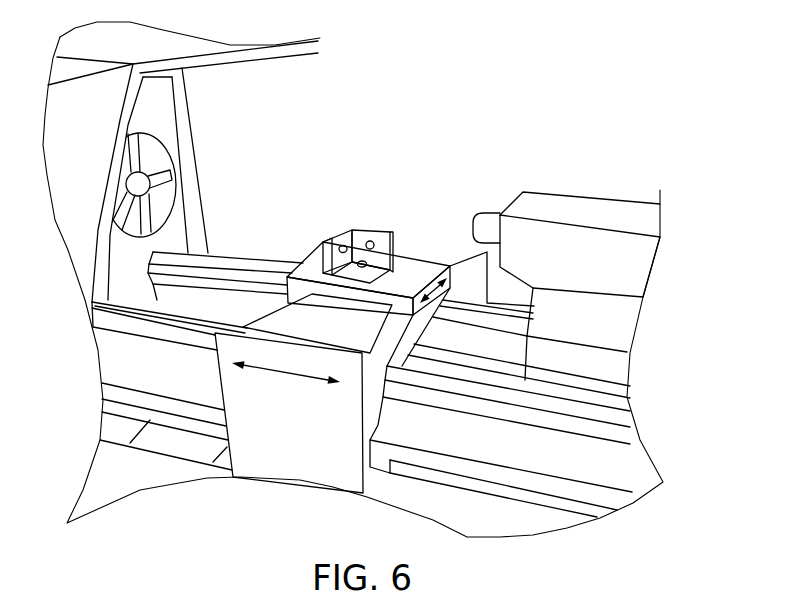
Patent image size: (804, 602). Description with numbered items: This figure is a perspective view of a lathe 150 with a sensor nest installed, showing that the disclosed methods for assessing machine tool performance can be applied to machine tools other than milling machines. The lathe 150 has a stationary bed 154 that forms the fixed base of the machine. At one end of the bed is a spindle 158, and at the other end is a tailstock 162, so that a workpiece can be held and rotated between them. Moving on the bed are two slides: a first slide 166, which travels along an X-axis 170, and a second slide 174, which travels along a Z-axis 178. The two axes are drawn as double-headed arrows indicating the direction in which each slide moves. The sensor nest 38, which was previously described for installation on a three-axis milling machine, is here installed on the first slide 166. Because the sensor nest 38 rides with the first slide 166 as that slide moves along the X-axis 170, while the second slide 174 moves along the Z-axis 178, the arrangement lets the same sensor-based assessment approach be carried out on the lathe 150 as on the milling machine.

The lathe 150 is at (643, 89).
The stationary bed 154 is at (241, 263).
The spindle 158 is at (180, 183).
The tailstock 162 is at (488, 213).
The first slide 166 is at (417, 258).
The X-axis 170 is at (447, 266).
The second slide 174 is at (221, 390).
The Z-axis 178 is at (291, 378).
The sensor nest 38 is at (364, 228).